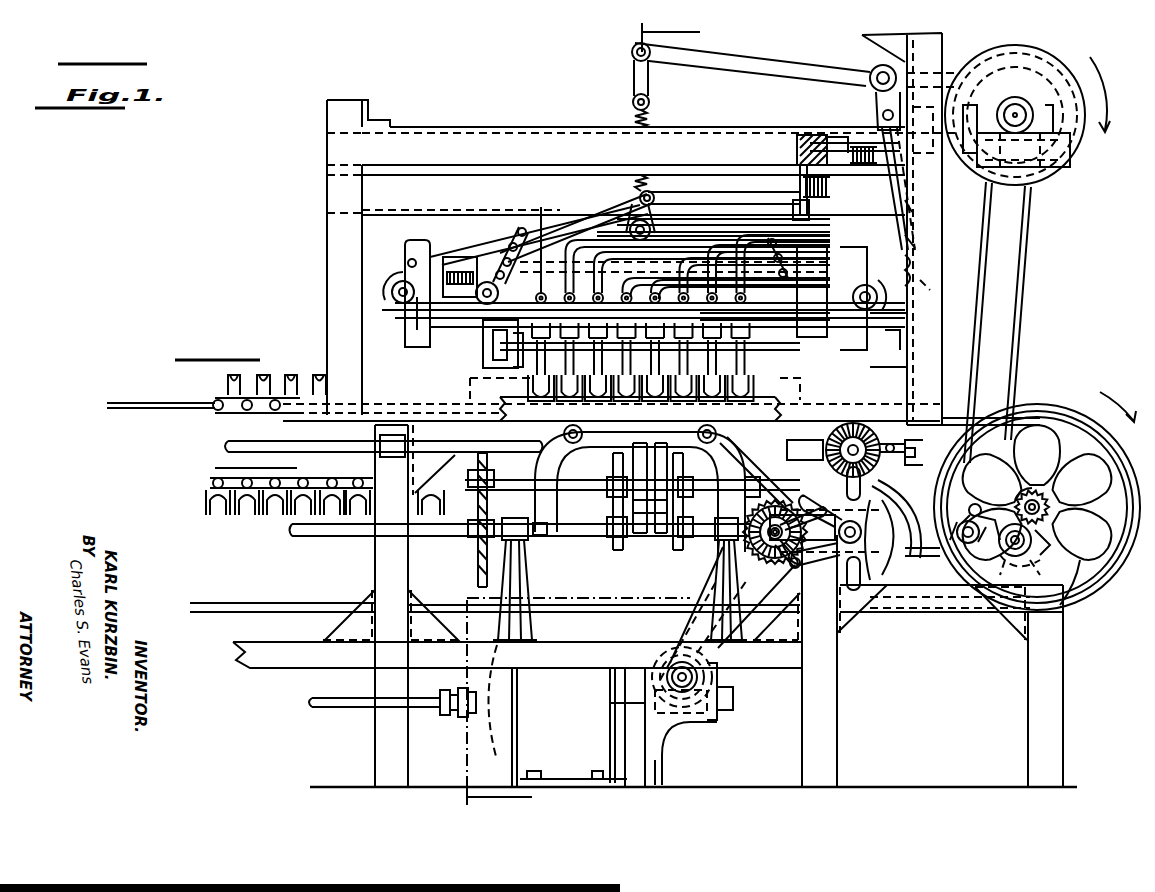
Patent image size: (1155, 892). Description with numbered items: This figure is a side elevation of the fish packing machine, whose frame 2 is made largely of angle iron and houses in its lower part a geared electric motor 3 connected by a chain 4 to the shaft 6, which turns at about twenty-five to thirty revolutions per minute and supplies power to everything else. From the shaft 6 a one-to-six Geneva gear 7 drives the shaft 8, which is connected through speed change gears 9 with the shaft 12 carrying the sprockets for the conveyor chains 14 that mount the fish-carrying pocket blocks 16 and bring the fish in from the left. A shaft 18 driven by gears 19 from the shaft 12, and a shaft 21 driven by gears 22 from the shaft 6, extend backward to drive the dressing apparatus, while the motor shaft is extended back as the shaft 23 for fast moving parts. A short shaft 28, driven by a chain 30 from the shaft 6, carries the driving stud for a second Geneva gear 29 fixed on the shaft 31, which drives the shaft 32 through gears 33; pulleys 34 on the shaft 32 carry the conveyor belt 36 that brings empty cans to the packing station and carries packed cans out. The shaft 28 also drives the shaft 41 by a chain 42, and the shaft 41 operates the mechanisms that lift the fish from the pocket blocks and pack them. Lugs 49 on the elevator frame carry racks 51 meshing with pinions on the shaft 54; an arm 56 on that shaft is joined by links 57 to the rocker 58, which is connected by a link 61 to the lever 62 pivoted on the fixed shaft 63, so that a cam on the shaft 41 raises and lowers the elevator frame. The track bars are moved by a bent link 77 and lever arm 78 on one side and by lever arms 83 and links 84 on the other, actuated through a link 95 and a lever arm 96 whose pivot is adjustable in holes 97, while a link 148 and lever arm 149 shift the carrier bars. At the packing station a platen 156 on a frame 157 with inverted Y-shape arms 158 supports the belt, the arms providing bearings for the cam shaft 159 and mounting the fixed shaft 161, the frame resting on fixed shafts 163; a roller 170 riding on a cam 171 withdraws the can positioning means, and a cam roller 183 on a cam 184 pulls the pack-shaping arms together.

The frame 2 is at (550, 160).
The electric motor 3 is at (572, 412).
The chain 4 is at (755, 620).
The shaft 6 is at (779, 530).
The Geneva gear 7 is at (830, 520).
The shaft 8 is at (858, 531).
The speed change gears 9 is at (896, 470).
The shaft 12 is at (868, 430).
The conveyor chains 14 is at (773, 432).
The pocket blocks 16 is at (770, 392).
The shaft 18 is at (230, 447).
The gears 19 is at (852, 432).
The shaft 21 is at (335, 530).
The gears 22 is at (792, 505).
The shaft 23 is at (358, 702).
The short shaft 28 is at (967, 545).
The Geneva gear 29 is at (1045, 548).
The chain 30 is at (930, 552).
The shaft 31 is at (1005, 552).
The shaft 32 is at (1048, 506).
The gears 33 is at (1030, 490).
The pulleys 34 is at (1097, 580).
The conveyor belt 36 is at (1030, 404).
The shaft 41 is at (1037, 114).
The chain 42 is at (1022, 226).
The lugs 49 is at (450, 252).
The rack 51 is at (423, 285).
The shaft 54 is at (398, 280).
The arm 56 is at (405, 260).
The links 57 is at (600, 210).
The rocker 58 is at (641, 196).
The link 61 is at (722, 197).
The lever 62 is at (888, 186).
The fixed shaft 63 is at (883, 65).
The bent link 77 is at (698, 243).
The lever arm 78 is at (516, 236).
The lever arms 83 is at (768, 245).
The links 84 is at (536, 241).
The link 95 is at (872, 240).
The lever arm 96 is at (912, 241).
The holes 97 is at (910, 216).
The link 148 is at (904, 255).
The lever arm 149 is at (936, 268).
The platen 156 is at (620, 448).
The frame 157 is at (620, 447).
The inverted Y-shape arms 158 is at (550, 478).
The cam shaft 159 is at (530, 485).
The fixed shaft 161 is at (566, 530).
The fixed shafts 163 is at (563, 434).
The roller 170 is at (630, 488).
The cam 171 is at (632, 505).
The cam roller 183 is at (680, 478).
The cam 184 is at (680, 505).